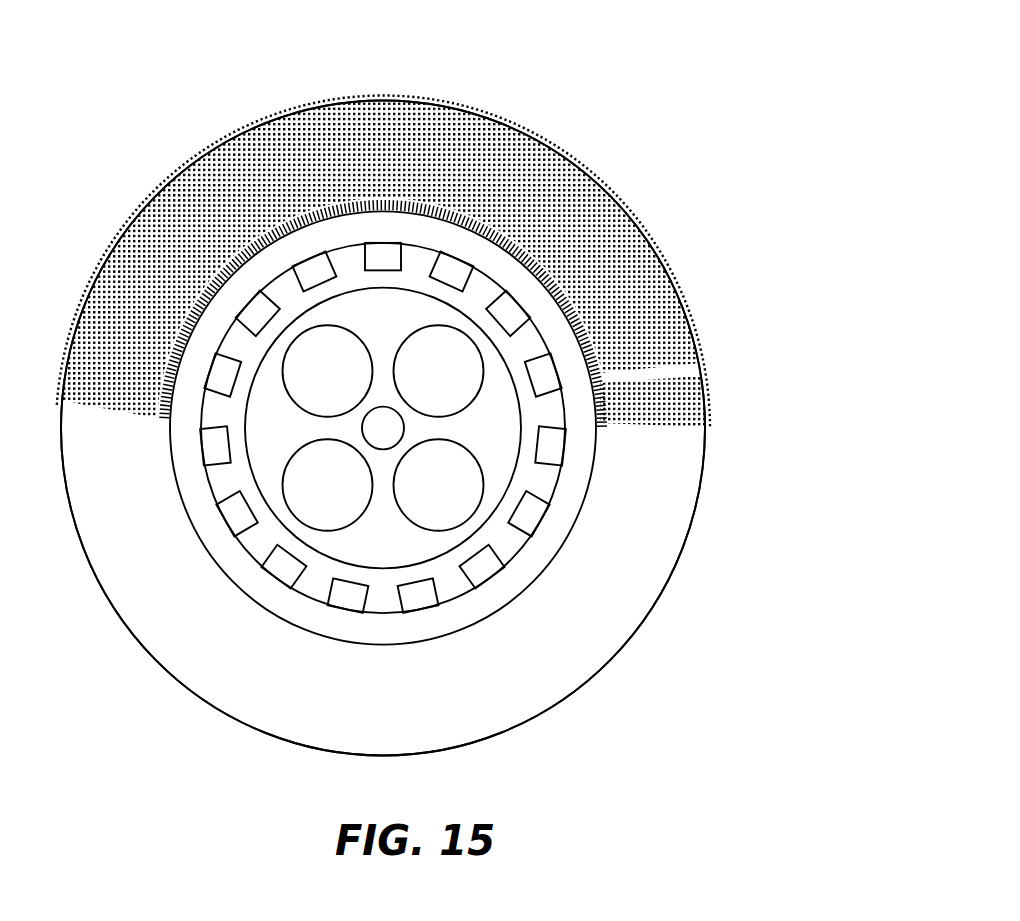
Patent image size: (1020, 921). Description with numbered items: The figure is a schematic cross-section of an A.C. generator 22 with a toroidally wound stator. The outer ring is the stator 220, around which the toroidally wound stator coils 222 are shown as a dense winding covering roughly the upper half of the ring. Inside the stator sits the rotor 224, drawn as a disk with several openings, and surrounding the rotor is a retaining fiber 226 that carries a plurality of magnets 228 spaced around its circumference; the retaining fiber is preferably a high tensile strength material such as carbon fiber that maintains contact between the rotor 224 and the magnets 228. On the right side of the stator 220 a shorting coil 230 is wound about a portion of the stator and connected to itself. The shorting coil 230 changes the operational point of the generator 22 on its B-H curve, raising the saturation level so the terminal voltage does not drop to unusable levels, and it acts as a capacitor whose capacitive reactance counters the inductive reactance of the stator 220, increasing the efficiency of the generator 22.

The A.C. generator 22 is at (678, 262).
The stator 220 is at (652, 607).
The stator coils 222 is at (422, 90).
The rotor 224 is at (501, 438).
The retaining fiber 226 is at (478, 581).
The magnets 228 is at (215, 497).
The shorting coil 230 is at (706, 399).